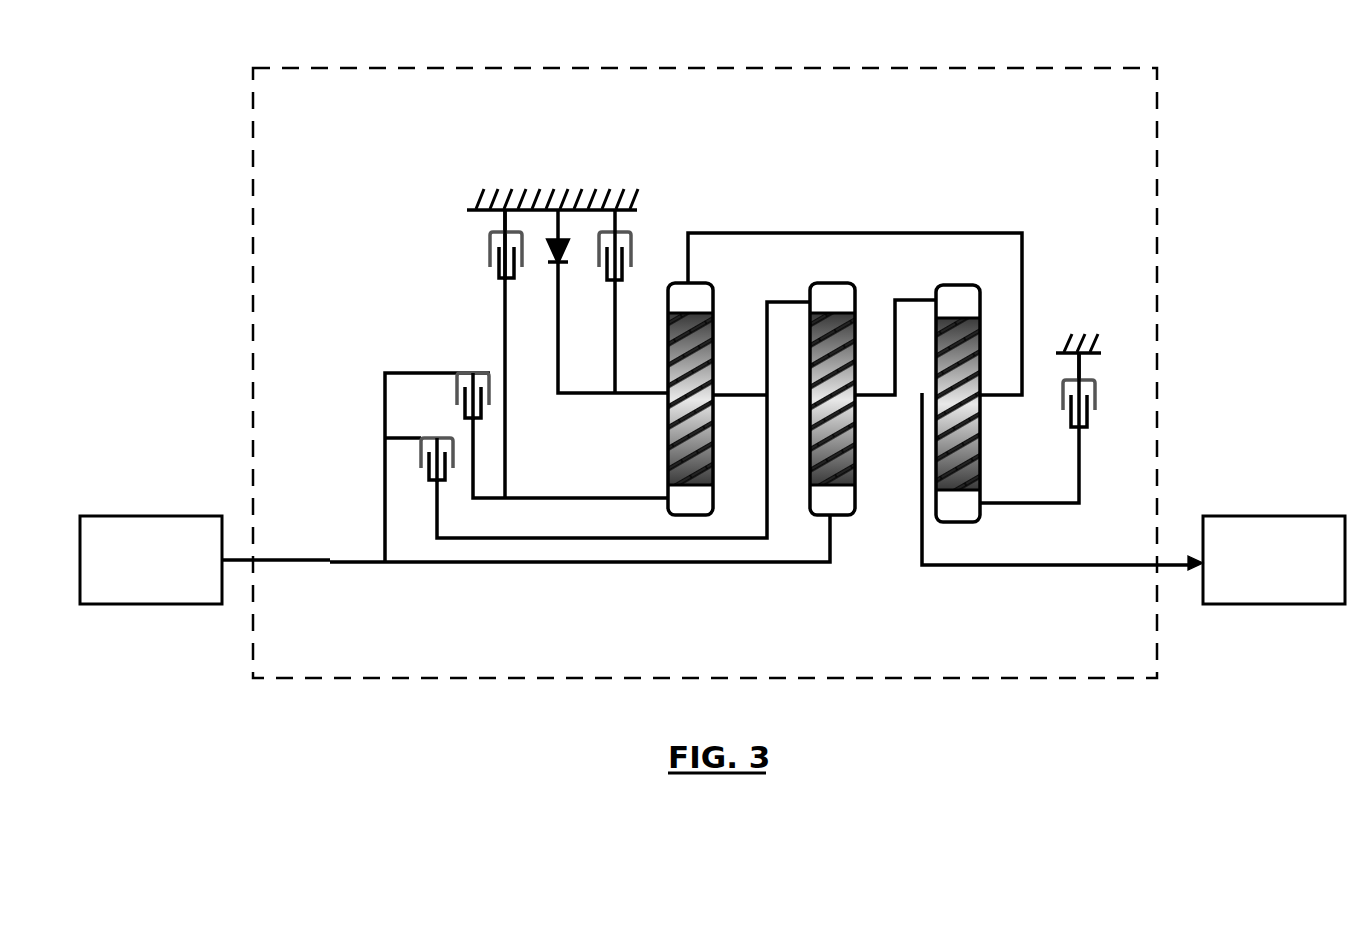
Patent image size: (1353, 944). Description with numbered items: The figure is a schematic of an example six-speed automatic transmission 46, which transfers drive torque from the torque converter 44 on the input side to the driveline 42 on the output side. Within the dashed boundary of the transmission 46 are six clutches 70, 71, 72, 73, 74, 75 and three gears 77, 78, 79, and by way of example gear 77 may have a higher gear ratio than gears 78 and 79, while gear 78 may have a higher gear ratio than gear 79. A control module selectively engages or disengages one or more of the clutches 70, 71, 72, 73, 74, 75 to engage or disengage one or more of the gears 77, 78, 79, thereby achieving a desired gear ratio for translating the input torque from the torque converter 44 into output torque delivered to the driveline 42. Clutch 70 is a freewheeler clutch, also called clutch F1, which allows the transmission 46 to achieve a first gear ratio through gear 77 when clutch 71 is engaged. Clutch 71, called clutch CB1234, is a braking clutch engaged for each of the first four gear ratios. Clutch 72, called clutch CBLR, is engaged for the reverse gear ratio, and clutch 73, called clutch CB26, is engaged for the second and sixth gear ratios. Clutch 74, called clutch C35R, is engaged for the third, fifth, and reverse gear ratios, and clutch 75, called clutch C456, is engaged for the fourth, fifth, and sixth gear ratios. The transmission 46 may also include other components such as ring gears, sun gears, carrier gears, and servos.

The driveline 42 is at (1276, 516).
The torque converter 44 is at (152, 516).
The transmission 46 is at (710, 68).
The freewheeler clutch 70 is at (1095, 400).
The clutch 71 is at (558, 270).
The clutch 72 is at (631, 252).
The clutch 73 is at (490, 252).
The clutch 74 is at (473, 373).
The clutch 75 is at (437, 438).
The gear 77 is at (982, 455).
The gear 78 is at (857, 455).
The gear 79 is at (668, 447).